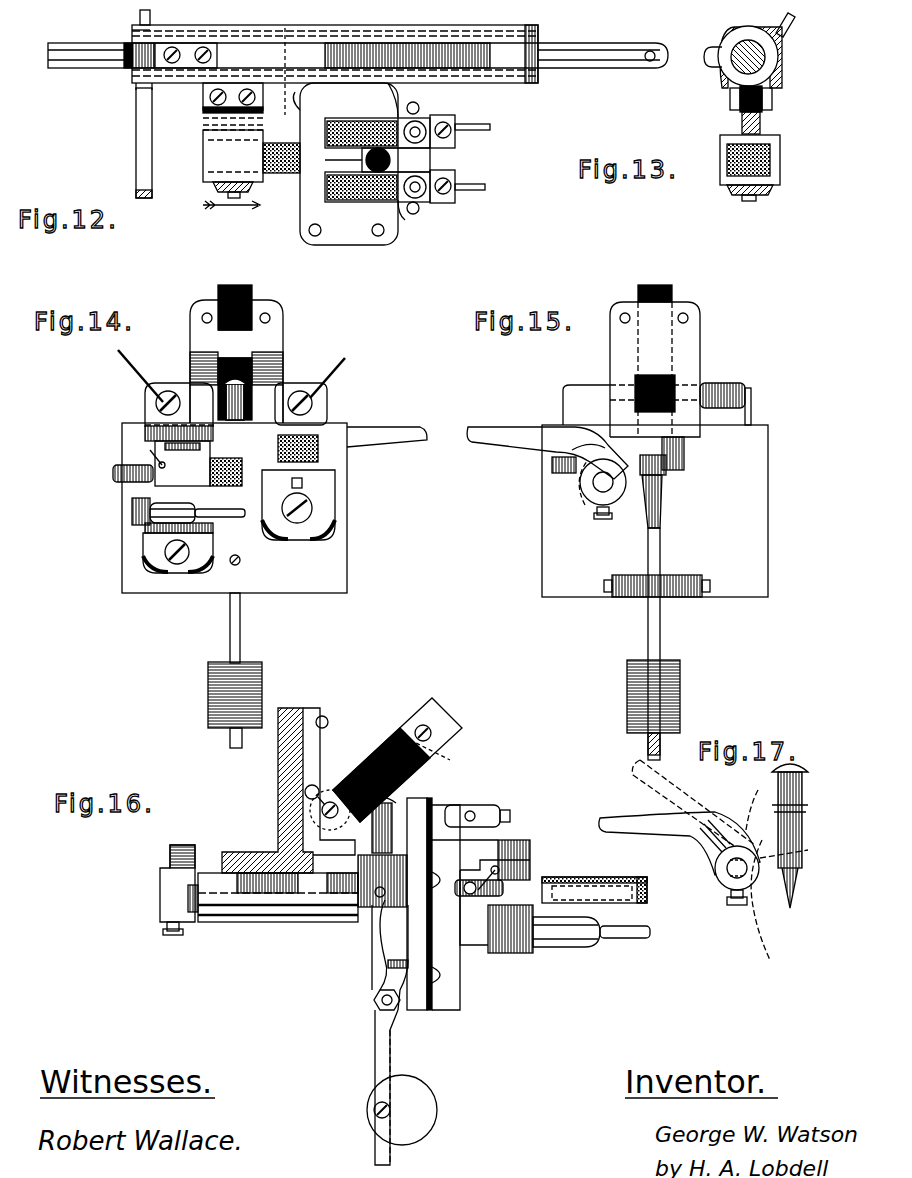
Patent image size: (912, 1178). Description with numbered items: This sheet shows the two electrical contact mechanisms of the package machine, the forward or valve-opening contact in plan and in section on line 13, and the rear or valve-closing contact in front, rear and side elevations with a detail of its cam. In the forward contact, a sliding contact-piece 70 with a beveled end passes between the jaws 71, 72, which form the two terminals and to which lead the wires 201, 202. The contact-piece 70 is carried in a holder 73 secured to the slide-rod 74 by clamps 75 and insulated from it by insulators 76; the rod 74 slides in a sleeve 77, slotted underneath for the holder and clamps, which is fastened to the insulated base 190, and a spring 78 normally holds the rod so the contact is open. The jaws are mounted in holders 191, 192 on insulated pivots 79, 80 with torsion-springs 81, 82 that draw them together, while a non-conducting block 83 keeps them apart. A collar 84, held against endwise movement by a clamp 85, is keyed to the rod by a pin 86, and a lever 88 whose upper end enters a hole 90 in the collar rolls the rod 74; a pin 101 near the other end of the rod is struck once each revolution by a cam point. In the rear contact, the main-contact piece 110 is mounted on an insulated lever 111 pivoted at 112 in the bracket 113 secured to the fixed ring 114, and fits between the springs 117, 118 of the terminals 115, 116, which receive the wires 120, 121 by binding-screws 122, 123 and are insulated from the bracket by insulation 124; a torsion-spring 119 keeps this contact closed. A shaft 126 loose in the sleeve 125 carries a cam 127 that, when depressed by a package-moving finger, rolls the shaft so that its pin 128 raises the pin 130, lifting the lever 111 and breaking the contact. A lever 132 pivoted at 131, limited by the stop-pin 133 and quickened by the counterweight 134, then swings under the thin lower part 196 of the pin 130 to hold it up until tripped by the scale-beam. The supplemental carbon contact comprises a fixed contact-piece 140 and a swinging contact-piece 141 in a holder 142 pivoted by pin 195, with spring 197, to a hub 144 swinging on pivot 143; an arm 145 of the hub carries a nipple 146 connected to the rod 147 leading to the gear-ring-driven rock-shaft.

In FIG. 12, the section line 13 is at (285, 95).
In FIG. 12, the sliding contact-piece 70 is at (290, 174).
In FIG. 13, the sliding contact-piece 70 is at (770, 160).
In FIG. 12, the terminal jaw 71 is at (356, 125).
In FIG. 12, the terminal jaw 72 is at (345, 198).
In FIG. 12, the holder 73 is at (207, 140).
In FIG. 13, the holder 73 is at (780, 142).
In FIG. 12, the slide-rod 74 is at (78, 62).
In FIG. 13, the slide-rod 74 is at (732, 68).
In FIG. 12, the clamp 75 is at (298, 106).
In FIG. 13, the clamp 75 is at (727, 96).
In FIG. 12, the insulator 76 is at (203, 110).
In FIG. 13, the insulator 76 is at (765, 118).
In FIG. 12, the sleeve 77 is at (226, 28).
In FIG. 13, the sleeve 77 is at (740, 32).
In FIG. 12, the spring 78 is at (455, 72).
In FIG. 12, the insulated pivot 79 is at (458, 125).
In FIG. 12, the insulated pivot 80 is at (420, 195).
In FIG. 12, the torsion-spring 81 is at (432, 150).
In FIG. 12, the torsion-spring 82 is at (120, 52).
In FIG. 12, the block 83 is at (392, 160).
In FIG. 12, the collar 84 is at (132, 30).
In FIG. 12, the clamp 85 is at (190, 66).
In FIG. 13, the clamp 85 is at (712, 50).
In FIG. 12, the pin 86 is at (140, 16).
In FIG. 13, the pin 86 is at (792, 24).
In FIG. 12, the lever 88 is at (136, 152).
In FIG. 12, the hole 90 is at (138, 86).
In FIG. 12, the pin 101 is at (648, 50).
In FIG. 14, the main-contact piece 110 is at (245, 345).
In FIG. 15, the main-contact piece 110 is at (680, 300).
In FIG. 16, the main-contact piece 110 is at (380, 752).
In FIG. 14, the insulated lever 111 is at (232, 290).
In FIG. 15, the insulated lever 111 is at (665, 290).
In FIG. 16, the pivot 112 is at (333, 800).
In FIG. 14, the bracket 113 is at (270, 318).
In FIG. 15, the bracket 113 is at (702, 325).
In FIG. 16, the bracket 113 is at (316, 716).
In FIG. 16, the fixed ring 114 is at (278, 772).
In FIG. 14, the terminal 115 is at (250, 385).
In FIG. 15, the terminal 115 is at (592, 388).
In FIG. 14, the terminal 116 is at (185, 395).
In FIG. 15, the terminal 116 is at (750, 416).
In FIG. 16, the terminal 116 is at (440, 800).
In FIG. 14, the spring 117 is at (332, 416).
In FIG. 14, the spring 118 is at (150, 410).
In FIG. 15, the torsion-spring 119 is at (725, 386).
In FIG. 16, the torsion-spring 119 is at (305, 806).
In FIG. 14, the wire 120 is at (358, 370).
In FIG. 14, the wire 121 is at (126, 376).
In FIG. 14, the binding-screw 122 is at (315, 400).
In FIG. 14, the binding-screw 123 is at (156, 402).
In FIG. 16, the binding-screw 123 is at (485, 812).
In FIG. 14, the insulation 124 is at (143, 562).
In FIG. 16, the sleeve 125 is at (290, 920).
In FIG. 15, the shaft 126 is at (592, 486).
In FIG. 16, the shaft 126 is at (190, 940).
In FIG. 17, the shaft 126 is at (730, 874).
In FIG. 14, the cam 127 is at (415, 445).
In FIG. 15, the cam 127 is at (522, 440).
In FIG. 16, the cam 127 is at (160, 866).
In FIG. 17, the cam 127 is at (630, 808).
In FIG. 15, the pin 128 is at (632, 495).
In FIG. 16, the pin 128 is at (378, 898).
In FIG. 17, the pin 128 is at (768, 830).
In FIG. 14, the pin 130 is at (236, 420).
In FIG. 15, the pin 130 is at (660, 500).
In FIG. 16, the pin 130 is at (385, 805).
In FIG. 17, the pin 130 is at (802, 792).
In FIG. 15, the pivot 131 is at (670, 575).
In FIG. 16, the pivot 131 is at (376, 1000).
In FIG. 14, the lever 132 is at (240, 628).
In FIG. 15, the lever 132 is at (660, 624).
In FIG. 16, the lever 132 is at (375, 1050).
In FIG. 16, the stop-pin 133 is at (388, 982).
In FIG. 14, the counterweight 134 is at (208, 680).
In FIG. 15, the counterweight 134 is at (627, 678).
In FIG. 16, the counterweight 134 is at (420, 1112).
In FIG. 14, the fixed contact-piece 140 is at (320, 452).
In FIG. 14, the swinging contact-piece 141 is at (248, 486).
In FIG. 16, the swinging contact-piece 141 is at (596, 876).
In FIG. 14, the holder 142 is at (182, 463).
In FIG. 16, the holder 142 is at (592, 891).
In FIG. 16, the pivot 143 is at (510, 842).
In FIG. 14, the hub 144 is at (208, 448).
In FIG. 16, the hub 144 is at (528, 866).
In FIG. 14, the arm 145 is at (132, 514).
In FIG. 16, the arm 145 is at (530, 950).
In FIG. 14, the nipple 146 is at (150, 522).
In FIG. 16, the nipple 146 is at (590, 948).
In FIG. 14, the rod 147 is at (242, 518).
In FIG. 16, the rod 147 is at (636, 938).
In FIG. 12, the insulated base 190 is at (331, 159).
In FIG. 17, the insulated base 190 is at (790, 902).
In FIG. 12, the holder 191 is at (390, 112).
In FIG. 12, the holder 192 is at (400, 216).
In FIG. 14, the pin 195 is at (113, 474).
In FIG. 16, the pin 195 is at (502, 890).
In FIG. 16, the thin lower part 196 is at (386, 910).
In FIG. 14, the spring 197 is at (150, 470).
In FIG. 16, the spring 197 is at (478, 892).
In FIG. 12, the wire 201 is at (485, 190).
In FIG. 12, the wire 202 is at (490, 127).